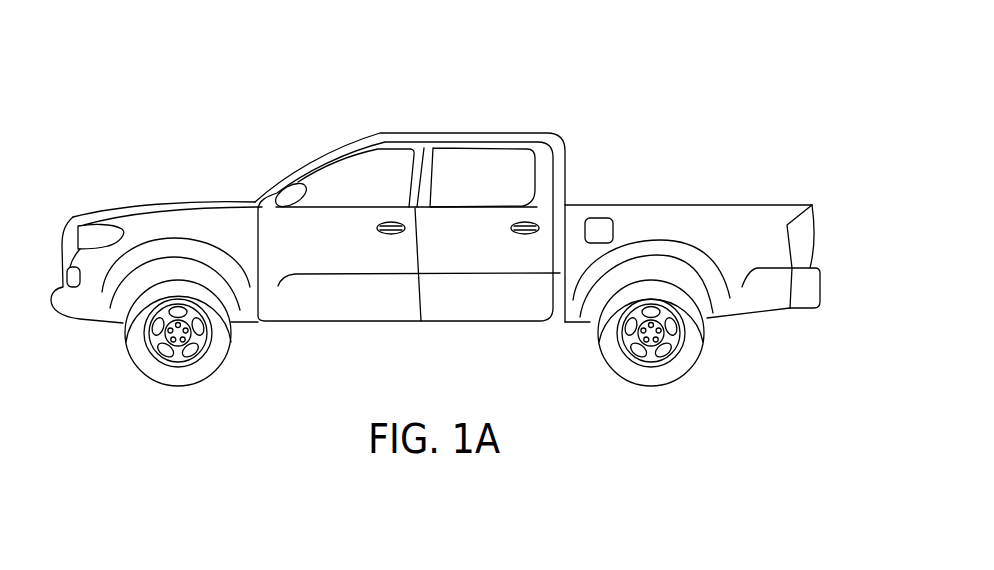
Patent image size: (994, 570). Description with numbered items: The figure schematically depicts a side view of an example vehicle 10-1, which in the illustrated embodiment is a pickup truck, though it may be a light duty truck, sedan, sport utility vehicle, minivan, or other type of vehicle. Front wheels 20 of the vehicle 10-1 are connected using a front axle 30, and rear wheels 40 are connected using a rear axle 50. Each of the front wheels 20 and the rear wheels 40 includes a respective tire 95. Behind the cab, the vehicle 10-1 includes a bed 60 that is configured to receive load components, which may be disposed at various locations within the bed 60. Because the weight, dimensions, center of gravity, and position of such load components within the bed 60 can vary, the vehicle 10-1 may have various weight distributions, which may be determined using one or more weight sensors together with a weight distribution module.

The vehicle 10-1 is at (222, 107).
The front wheels 20 is at (192, 393).
The front axle 30 is at (178, 335).
The rear wheels 40 is at (665, 395).
The rear axle 50 is at (651, 335).
The bed 60 is at (692, 183).
The tire 95 is at (210, 360).